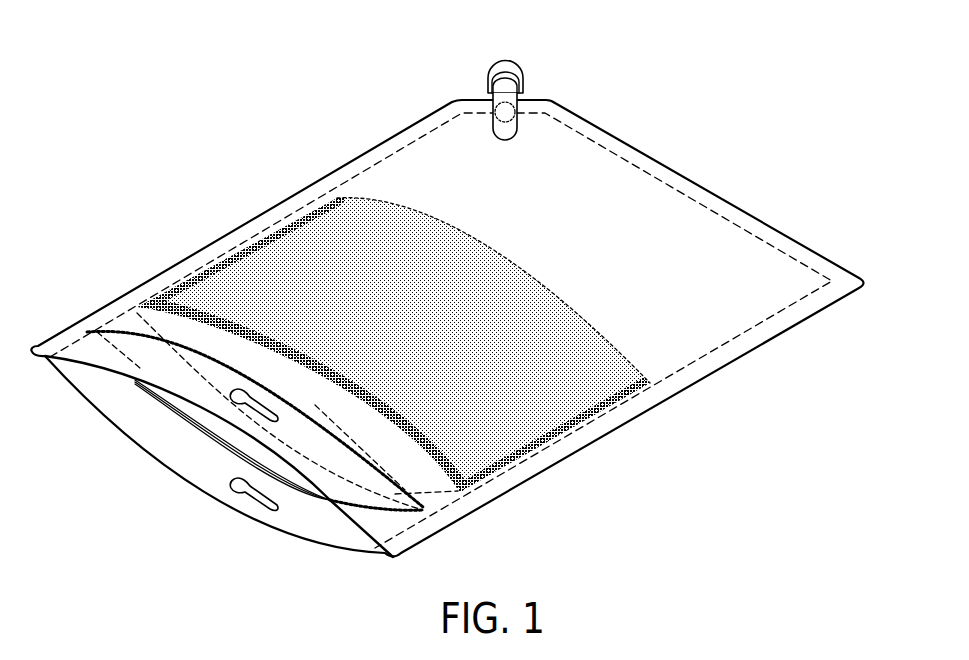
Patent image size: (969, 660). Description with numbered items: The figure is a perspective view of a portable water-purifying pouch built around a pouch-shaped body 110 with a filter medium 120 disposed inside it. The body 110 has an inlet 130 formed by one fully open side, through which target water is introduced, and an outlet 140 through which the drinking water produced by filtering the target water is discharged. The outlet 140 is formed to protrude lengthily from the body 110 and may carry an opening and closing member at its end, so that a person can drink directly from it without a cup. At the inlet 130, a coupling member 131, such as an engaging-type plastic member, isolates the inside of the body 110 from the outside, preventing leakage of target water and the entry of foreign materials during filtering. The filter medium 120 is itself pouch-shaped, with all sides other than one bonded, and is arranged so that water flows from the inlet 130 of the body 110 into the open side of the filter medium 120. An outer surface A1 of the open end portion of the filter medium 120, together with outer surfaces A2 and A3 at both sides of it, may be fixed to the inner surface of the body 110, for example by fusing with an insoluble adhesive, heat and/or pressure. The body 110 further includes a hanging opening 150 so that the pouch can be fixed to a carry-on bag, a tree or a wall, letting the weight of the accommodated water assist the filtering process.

The pouch-shaped body 110 is at (630, 150).
The filter medium 120 is at (605, 347).
The inlet 130 is at (185, 418).
The coupling member 131 is at (220, 445).
The outlet 140 is at (506, 60).
The hanging opening 150 is at (240, 493).
The outer surface of the open end portion A1 is at (410, 463).
The outer surface at one side A2 is at (620, 403).
The outer surface at the other side A3 is at (233, 237).